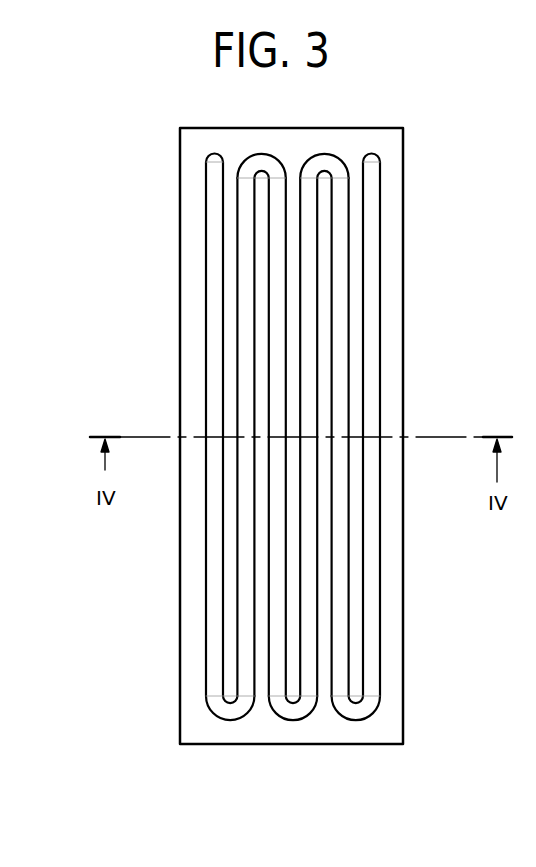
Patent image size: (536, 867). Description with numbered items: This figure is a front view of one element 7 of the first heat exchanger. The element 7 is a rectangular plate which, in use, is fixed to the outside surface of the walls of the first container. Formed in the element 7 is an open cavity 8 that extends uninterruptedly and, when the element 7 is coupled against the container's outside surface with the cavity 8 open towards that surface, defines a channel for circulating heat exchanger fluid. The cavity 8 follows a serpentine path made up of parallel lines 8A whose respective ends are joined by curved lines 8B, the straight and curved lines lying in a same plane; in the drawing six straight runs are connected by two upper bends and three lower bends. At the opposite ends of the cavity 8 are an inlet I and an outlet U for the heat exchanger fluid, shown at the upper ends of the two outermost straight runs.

The element 7 is at (170, 353).
The open cavity 8 is at (292, 456).
The parallel lines 8A is at (250, 591).
The curved lines 8B is at (349, 734).
The inlet I is at (195, 150).
The outlet U is at (380, 145).